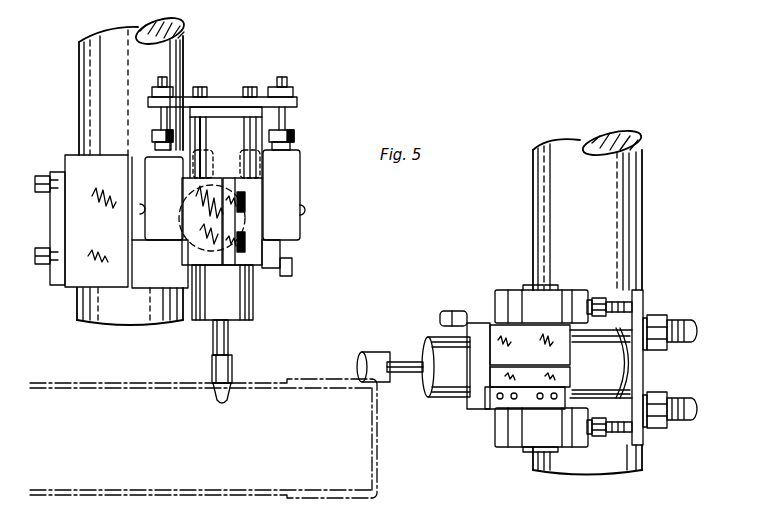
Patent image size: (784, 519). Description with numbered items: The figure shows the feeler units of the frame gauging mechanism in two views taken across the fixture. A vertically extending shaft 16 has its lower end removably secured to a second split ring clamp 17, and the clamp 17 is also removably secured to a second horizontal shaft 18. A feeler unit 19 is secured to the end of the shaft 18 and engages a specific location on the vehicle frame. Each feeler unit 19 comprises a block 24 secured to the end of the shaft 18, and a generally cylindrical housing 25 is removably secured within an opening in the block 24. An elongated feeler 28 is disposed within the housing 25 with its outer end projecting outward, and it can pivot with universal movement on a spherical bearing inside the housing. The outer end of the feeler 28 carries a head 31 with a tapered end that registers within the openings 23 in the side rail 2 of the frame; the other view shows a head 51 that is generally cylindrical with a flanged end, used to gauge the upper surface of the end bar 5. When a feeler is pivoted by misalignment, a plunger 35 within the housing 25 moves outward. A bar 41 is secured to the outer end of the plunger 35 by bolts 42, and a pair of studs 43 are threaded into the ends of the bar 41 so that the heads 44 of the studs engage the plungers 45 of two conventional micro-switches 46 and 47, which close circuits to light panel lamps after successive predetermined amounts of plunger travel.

The side rail 2 is at (118, 383).
The end bar 5 is at (378, 462).
The vertically extending shaft 16 is at (81, 50).
The second split ring clamp 17 is at (78, 160).
The second horizontal shaft 18 is at (190, 203).
The feeler unit 19 is at (282, 292).
The opening 23 is at (236, 385).
The block 24 is at (185, 250).
The cylindrical housing 25 is at (206, 322).
The feeler 28 is at (230, 345).
The head 31 is at (216, 400).
The plunger 35 is at (221, 107).
The bar 41 is at (298, 102).
The bolts 42 is at (200, 88).
The studs 43 is at (164, 80).
The heads 44 is at (152, 135).
The plungers 45 is at (158, 146).
The micro-switch 46 is at (298, 167).
The micro-switch 47 is at (150, 165).
The head 51 is at (375, 355).